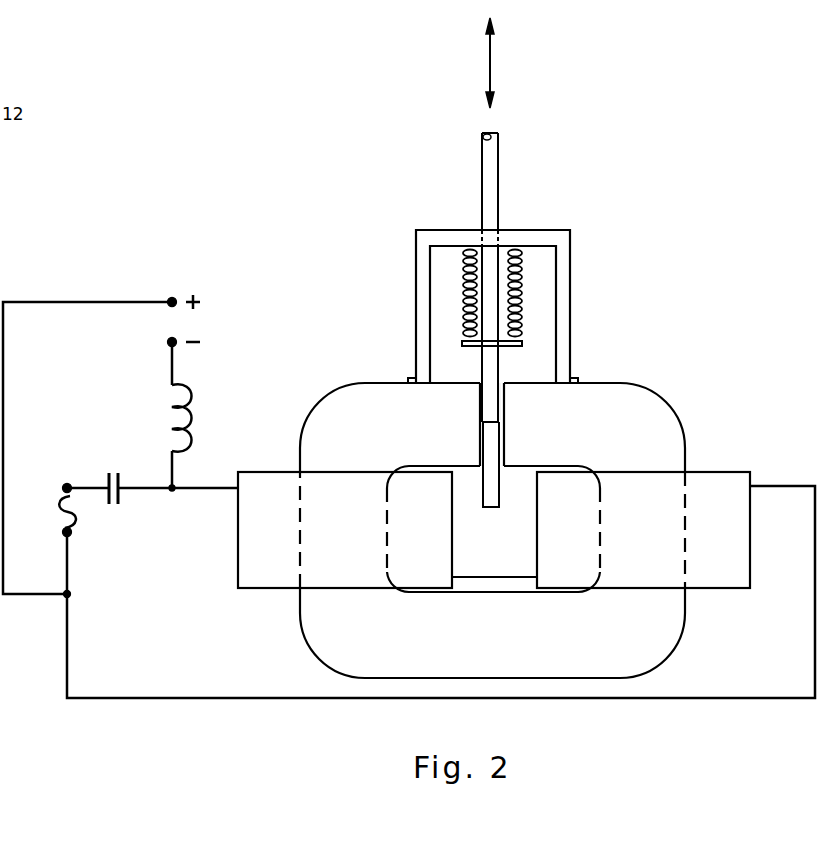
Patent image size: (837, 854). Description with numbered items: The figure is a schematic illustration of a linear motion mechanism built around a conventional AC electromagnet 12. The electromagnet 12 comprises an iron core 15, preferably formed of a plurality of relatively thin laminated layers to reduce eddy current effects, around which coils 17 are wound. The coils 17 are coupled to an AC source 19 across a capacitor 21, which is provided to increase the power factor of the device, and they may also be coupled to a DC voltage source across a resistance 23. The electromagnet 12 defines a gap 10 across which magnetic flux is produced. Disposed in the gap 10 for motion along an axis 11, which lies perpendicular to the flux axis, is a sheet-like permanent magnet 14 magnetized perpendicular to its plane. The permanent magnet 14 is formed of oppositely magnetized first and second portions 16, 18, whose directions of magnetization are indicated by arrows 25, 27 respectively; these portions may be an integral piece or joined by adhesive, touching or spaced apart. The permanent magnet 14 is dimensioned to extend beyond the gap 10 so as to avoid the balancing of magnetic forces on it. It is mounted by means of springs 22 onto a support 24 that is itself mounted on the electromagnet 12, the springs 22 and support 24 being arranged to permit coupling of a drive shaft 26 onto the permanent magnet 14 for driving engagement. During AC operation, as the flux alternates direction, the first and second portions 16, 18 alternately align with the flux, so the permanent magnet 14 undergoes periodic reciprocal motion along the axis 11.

The gap 10 is at (508, 395).
The axis 11 is at (497, 60).
The AC electromagnet 12 is at (676, 403).
The permanent magnet 14 is at (503, 418).
The iron core 15 is at (606, 394).
The first portion 16 is at (485, 409).
The coils 17 is at (282, 476).
The second portion 18 is at (493, 501).
The AC source 19 is at (62, 522).
The capacitor 21 is at (108, 478).
The springs 22 is at (512, 257).
The resistance 23 is at (184, 417).
The support 24 is at (413, 289).
The arrow 25 is at (479, 381).
The drive shaft 26 is at (492, 183).
The arrow 27 is at (491, 459).